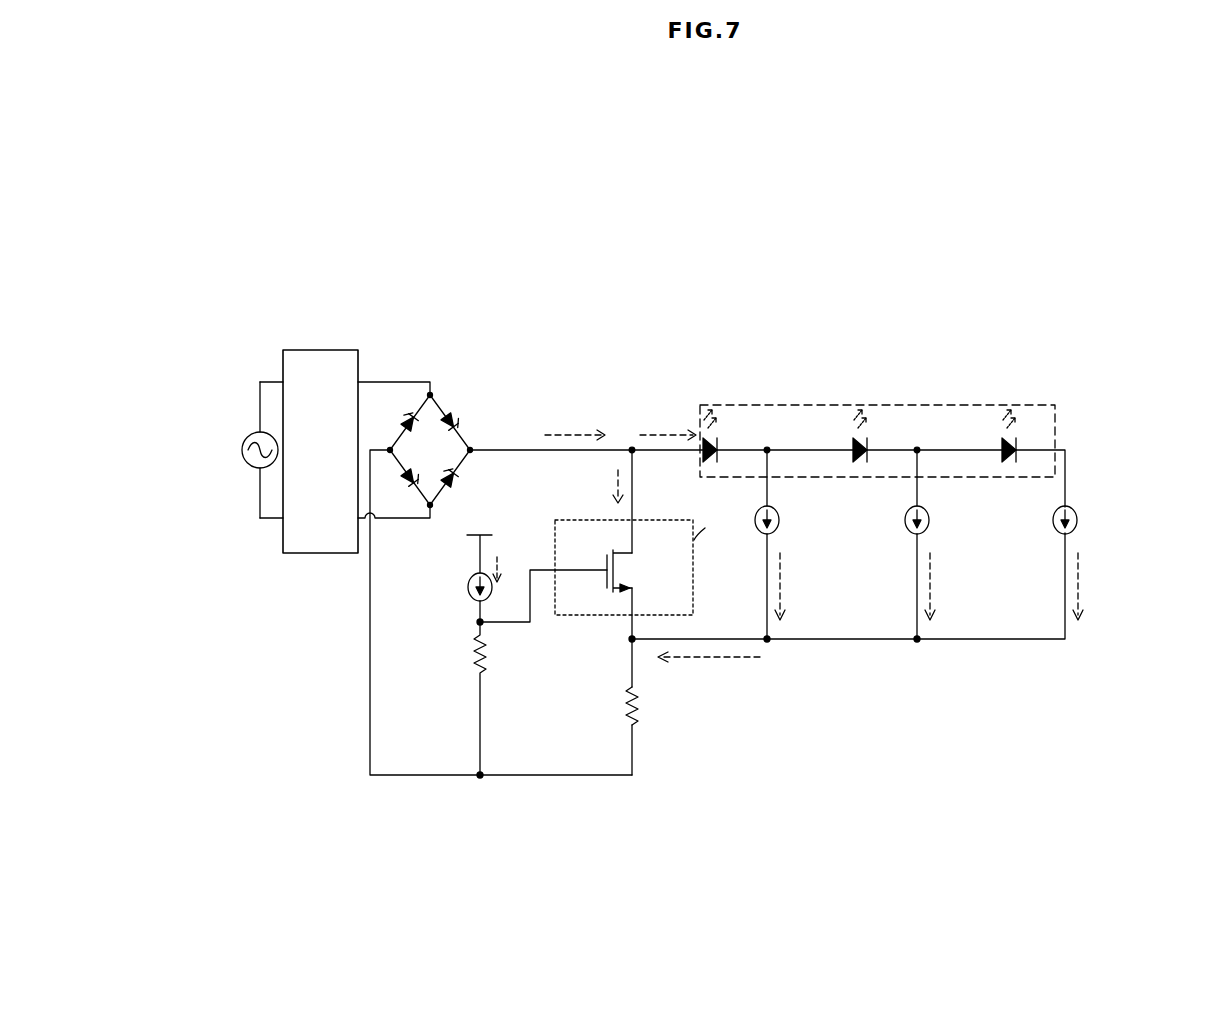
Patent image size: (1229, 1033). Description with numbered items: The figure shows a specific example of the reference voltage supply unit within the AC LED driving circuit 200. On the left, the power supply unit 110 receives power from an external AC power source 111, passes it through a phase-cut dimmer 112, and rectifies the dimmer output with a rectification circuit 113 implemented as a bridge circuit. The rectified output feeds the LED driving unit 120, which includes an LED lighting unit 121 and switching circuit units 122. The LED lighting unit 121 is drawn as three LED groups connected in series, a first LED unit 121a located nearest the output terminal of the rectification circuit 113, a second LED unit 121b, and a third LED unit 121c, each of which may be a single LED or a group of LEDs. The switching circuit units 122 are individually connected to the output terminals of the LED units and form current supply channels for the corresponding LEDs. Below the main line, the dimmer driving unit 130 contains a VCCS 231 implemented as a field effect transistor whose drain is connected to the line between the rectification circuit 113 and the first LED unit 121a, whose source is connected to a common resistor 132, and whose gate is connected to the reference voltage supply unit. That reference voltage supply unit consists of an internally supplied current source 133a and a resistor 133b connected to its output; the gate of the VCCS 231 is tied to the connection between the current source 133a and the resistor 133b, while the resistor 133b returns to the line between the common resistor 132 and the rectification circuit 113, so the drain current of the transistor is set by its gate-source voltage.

The AC LED driving circuit 200 is at (187, 156).
The power supply unit 110 is at (318, 318).
The AC power source 111 is at (243, 462).
The dimmer 112 is at (302, 553).
The rectification circuit 113 is at (463, 433).
The LED driving unit 120 is at (1090, 462).
The LED lighting unit 121 is at (913, 405).
The first LED unit 121a is at (718, 444).
The second LED unit 121b is at (866, 442).
The third LED unit 121c is at (1017, 435).
The switching circuit units 122 is at (780, 520).
The dimmer driving unit 130 is at (428, 598).
The common resistor 132 is at (633, 725).
The current source 133a is at (468, 581).
The resistor 133b is at (478, 673).
The VCCS 231 is at (607, 555).